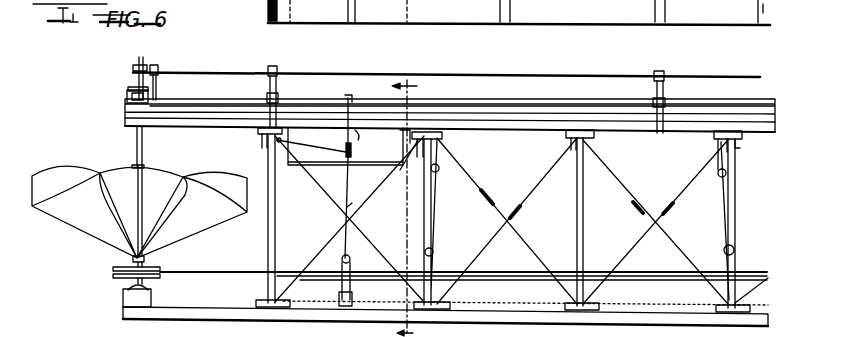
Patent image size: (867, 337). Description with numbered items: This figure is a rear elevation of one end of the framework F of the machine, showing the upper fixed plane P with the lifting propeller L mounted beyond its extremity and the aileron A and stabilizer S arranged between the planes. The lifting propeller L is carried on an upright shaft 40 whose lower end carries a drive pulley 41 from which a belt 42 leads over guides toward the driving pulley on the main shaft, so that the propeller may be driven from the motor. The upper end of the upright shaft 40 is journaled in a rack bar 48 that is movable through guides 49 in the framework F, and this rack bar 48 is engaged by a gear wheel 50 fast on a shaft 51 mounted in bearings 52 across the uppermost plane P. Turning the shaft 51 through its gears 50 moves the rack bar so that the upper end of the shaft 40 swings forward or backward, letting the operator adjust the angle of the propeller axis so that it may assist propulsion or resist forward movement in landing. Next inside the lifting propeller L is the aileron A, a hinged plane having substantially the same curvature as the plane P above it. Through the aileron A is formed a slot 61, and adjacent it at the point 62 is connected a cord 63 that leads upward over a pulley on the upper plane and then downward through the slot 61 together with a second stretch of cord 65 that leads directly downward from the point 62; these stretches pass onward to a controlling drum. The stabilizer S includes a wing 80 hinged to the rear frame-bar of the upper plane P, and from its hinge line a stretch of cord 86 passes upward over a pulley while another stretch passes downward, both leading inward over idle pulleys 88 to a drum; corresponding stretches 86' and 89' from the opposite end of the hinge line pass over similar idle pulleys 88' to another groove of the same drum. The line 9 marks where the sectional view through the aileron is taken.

The shaft 51 is at (217, 71).
The bearings 52 is at (157, 67).
The gear wheel 50 is at (140, 58).
The rack bar 48 is at (138, 88).
The guides 49 is at (130, 97).
The upper fixed plane P is at (270, 102).
The framework F is at (528, 127).
The upright shaft 40 is at (142, 148).
The lifting propeller L is at (139, 213).
The drive pulley 41 is at (117, 272).
The belt 42 is at (184, 276).
The aileron A is at (315, 137).
The slot 61 is at (357, 155).
The point 62 is at (311, 172).
The second stretch of cord 65 is at (344, 193).
The cord 63 is at (358, 138).
The section line 9- 9 is at (404, 191).
The wing 80 is at (507, 168).
The stabilizer S is at (664, 170).
The stretch of cord 86 is at (443, 156).
The idle pulleys 88 is at (447, 240).
The cord stretch 89' is at (708, 221).
The cord stretch 86' is at (746, 171).
The idle pulleys 88' is at (751, 238).